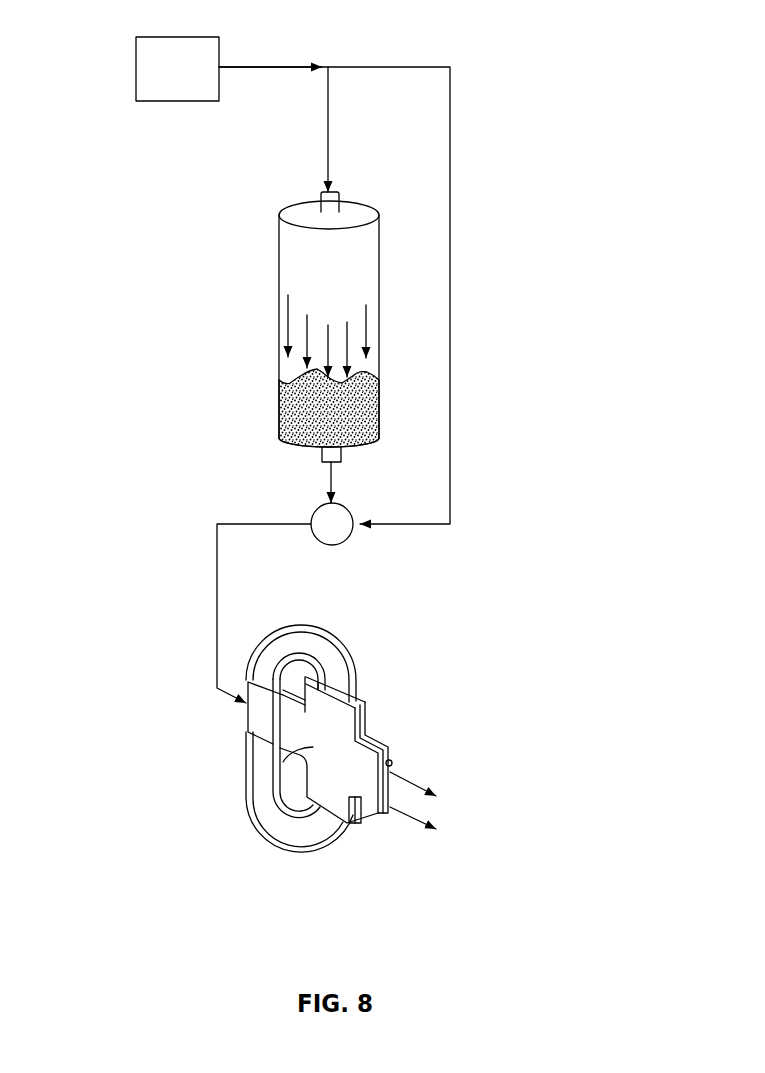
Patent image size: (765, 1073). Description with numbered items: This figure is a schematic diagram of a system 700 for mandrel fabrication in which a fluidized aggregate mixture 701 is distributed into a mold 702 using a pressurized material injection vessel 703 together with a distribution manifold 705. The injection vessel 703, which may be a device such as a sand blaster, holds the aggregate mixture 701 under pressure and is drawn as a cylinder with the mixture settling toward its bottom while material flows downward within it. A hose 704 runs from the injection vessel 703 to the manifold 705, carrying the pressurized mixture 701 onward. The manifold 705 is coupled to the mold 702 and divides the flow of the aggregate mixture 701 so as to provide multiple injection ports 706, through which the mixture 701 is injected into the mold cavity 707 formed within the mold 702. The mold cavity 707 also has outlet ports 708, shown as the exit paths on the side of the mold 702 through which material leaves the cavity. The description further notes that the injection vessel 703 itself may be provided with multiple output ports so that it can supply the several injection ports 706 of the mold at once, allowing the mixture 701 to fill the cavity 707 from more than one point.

The system 700 is at (118, 347).
The fluidized aggregate mixture 701 is at (287, 408).
The mold 702 is at (347, 775).
The pressurized material injection vessel 703 is at (278, 252).
The hose 704 is at (217, 600).
The manifold 705 is at (247, 712).
The injection ports 706 is at (327, 688).
The mold cavity 707 is at (283, 762).
The outlet ports 708 is at (392, 762).